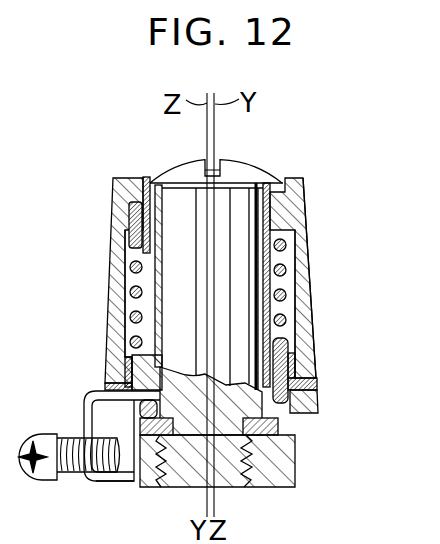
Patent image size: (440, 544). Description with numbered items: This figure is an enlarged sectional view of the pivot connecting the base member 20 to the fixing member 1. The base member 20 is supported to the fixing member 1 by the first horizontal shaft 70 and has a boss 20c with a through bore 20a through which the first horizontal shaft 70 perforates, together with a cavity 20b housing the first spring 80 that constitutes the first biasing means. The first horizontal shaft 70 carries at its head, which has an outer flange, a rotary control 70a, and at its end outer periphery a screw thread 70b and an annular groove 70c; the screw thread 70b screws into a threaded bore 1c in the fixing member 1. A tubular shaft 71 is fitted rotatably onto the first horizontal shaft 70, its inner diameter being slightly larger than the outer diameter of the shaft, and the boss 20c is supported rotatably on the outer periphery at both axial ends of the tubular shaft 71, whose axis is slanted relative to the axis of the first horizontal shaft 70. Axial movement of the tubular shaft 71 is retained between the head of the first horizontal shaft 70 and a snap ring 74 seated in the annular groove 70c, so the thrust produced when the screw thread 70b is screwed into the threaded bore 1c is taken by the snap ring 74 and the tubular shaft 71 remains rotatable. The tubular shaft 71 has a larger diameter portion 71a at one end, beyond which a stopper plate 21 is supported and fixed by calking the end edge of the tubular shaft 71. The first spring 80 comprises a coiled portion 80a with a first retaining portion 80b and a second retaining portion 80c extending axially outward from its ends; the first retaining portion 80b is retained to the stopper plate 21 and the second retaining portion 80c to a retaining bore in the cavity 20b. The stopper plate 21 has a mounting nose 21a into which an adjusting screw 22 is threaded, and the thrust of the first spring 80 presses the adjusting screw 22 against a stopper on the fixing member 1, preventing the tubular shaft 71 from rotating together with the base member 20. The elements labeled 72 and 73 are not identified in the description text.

The fixing member 1 is at (282, 480).
The threaded bore 1c is at (241, 487).
The base member 20 is at (312, 250).
The through bore 20a is at (272, 219).
The cavity 20b is at (293, 330).
The boss 20c is at (313, 278).
The stopper plate 21 is at (138, 405).
The mounting nose 21a is at (105, 481).
The adjusting screw 22 is at (41, 478).
The first horizontal shaft 70 is at (176, 325).
The rotary control 70a is at (222, 166).
The screw thread 70b is at (252, 450).
The annular groove 70c is at (305, 392).
The tubular shaft 71 is at (128, 298).
The larger diameter portion 71a is at (293, 368).
The liner 72 is at (143, 181).
The gasket 73 is at (125, 380).
The snap ring 74 is at (282, 430).
The first spring 80 is at (290, 296).
The coiled portion 80a is at (130, 290).
The first retaining portion 80b is at (293, 357).
The second retaining portion 80c is at (130, 214).